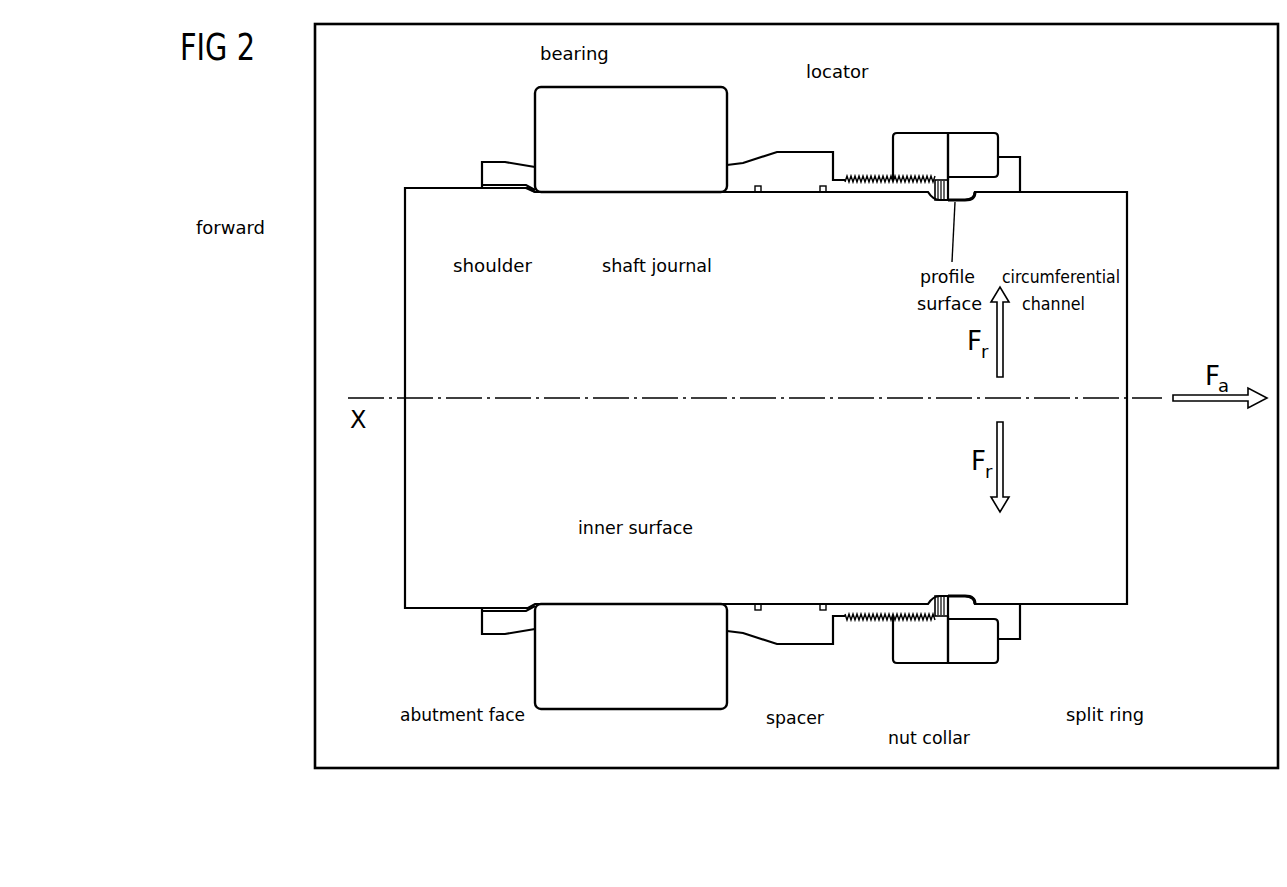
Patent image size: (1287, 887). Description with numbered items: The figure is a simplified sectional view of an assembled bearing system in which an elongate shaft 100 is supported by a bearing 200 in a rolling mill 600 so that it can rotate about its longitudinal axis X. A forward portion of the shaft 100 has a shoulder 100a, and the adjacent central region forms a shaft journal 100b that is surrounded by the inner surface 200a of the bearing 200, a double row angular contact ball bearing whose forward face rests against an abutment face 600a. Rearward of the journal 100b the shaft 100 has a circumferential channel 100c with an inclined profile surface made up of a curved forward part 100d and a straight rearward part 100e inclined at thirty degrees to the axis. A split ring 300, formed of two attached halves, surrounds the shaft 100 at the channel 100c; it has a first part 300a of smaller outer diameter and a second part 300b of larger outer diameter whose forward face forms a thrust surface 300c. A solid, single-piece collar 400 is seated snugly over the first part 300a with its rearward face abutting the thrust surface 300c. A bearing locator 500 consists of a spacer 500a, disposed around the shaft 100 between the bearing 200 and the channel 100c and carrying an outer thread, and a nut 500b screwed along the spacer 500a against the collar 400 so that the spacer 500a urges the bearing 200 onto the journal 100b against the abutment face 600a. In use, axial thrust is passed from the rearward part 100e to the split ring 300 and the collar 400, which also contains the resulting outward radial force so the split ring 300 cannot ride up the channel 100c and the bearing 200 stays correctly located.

The shaft 100 is at (1127, 478).
The shoulder 100a is at (530, 192).
The shaft journal 100b is at (727, 199).
The circumferential channel 100c is at (967, 205).
The forward part of the profile surface 100d is at (942, 203).
The rearward part of the profile surface 100e is at (977, 595).
The bearing 200 is at (631, 95).
The inner surface 200a is at (620, 603).
The split ring 300 is at (1042, 646).
The first part of the split ring 300a is at (965, 183).
The second part of the split ring 300b is at (1013, 178).
The thrust surface 300c is at (1010, 157).
The collar 400 is at (972, 665).
The bearing locator 500 is at (798, 125).
The spacer 500a is at (790, 645).
The nut 500b is at (915, 665).
The rolling mill 600 is at (325, 698).
The abutment face 600a is at (486, 634).